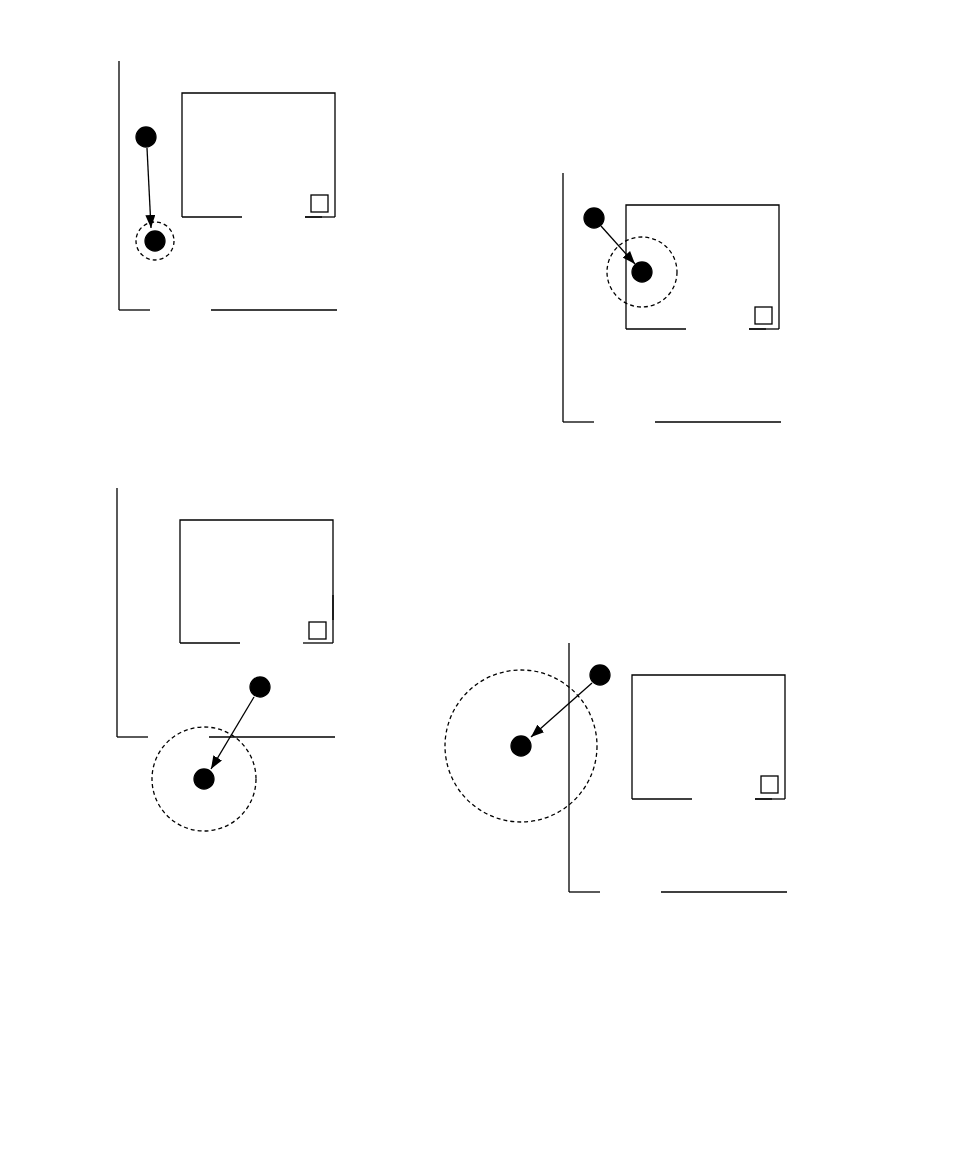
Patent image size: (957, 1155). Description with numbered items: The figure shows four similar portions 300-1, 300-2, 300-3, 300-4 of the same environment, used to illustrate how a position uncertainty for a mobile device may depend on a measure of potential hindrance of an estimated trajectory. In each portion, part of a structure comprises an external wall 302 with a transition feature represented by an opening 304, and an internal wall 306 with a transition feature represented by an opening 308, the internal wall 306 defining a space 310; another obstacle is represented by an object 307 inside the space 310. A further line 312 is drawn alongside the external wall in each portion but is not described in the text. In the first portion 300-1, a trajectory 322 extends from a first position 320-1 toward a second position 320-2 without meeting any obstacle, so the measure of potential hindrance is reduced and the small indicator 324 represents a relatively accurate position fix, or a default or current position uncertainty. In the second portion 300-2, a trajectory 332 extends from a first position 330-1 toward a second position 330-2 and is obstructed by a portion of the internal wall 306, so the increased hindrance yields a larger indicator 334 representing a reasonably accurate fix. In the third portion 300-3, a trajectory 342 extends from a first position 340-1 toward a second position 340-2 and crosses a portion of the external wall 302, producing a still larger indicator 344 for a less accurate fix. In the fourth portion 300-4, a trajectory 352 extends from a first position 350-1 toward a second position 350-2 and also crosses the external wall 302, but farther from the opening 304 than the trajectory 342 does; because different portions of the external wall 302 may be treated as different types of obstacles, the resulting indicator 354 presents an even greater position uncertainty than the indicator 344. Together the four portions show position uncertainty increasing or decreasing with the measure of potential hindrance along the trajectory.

In FIG. 3A, the portion of environment 300-1 is at (213, 38).
In FIG. 3B, the portion of environment 300-2 is at (656, 152).
In FIG. 3C, the portion of environment 300-3 is at (211, 465).
In FIG. 3D, the portion of environment 300-4 is at (663, 619).
In FIG. 3A, the external wall 302 is at (305, 312).
In FIG. 3B, the external wall 302 is at (749, 424).
In FIG. 3C, the external wall 302 is at (305, 739).
In FIG. 3D, the external wall 302 is at (578, 895).
In FIG. 3A, the opening 304 is at (182, 316).
In FIG. 3B, the opening 304 is at (626, 428).
In FIG. 3C, the opening 304 is at (183, 722).
In FIG. 3D, the opening 304 is at (630, 898).
In FIG. 3A, the internal wall 306 is at (321, 217).
In FIG. 3B, the internal wall 306 is at (765, 329).
In FIG. 3C, the internal wall 306 is at (333, 604).
In FIG. 3D, the internal wall 306 is at (771, 799).
In FIG. 3A, the object 307 is at (331, 201).
In FIG. 3B, the object 307 is at (775, 313).
In FIG. 3C, the object 307 is at (328, 627).
In FIG. 3D, the object 307 is at (781, 786).
In FIG. 3A, the opening 308 is at (260, 233).
In FIG. 3B, the opening 308 is at (704, 345).
In FIG. 3C, the opening 308 is at (268, 646).
In FIG. 3D, the opening 308 is at (709, 814).
In FIG. 3A, the space 310 is at (302, 146).
In FIG. 3B, the space 310 is at (746, 258).
In FIG. 3C, the space 310 is at (301, 570).
In FIG. 3D, the space 310 is at (751, 726).
In FIG. 3A, the left boundary line 312 is at (170, 113).
In FIG. 3B, the left boundary line 312 is at (614, 225).
In FIG. 3C, the left boundary line 312 is at (169, 540).
In FIG. 3D, the left boundary line 312 is at (619, 831).
In FIG. 3A, the first position 320-1 is at (137, 136).
In FIG. 3A, the second position 320-2 is at (145, 240).
In FIG. 3A, the trajectory 322 is at (147, 173).
In FIG. 3A, the indicator 324 is at (140, 255).
In FIG. 3B, the first position 330-1 is at (585, 221).
In FIG. 3B, the second position 330-2 is at (640, 282).
In FIG. 3B, the trajectory 332 is at (612, 238).
In FIG. 3B, the indicator 334 is at (610, 285).
In FIG. 3C, the first position 340-1 is at (270, 683).
In FIG. 3C, the second position 340-2 is at (215, 784).
In FIG. 3C, the trajectory 342 is at (243, 712).
In FIG. 3C, the indicator 344 is at (182, 830).
In FIG. 3D, the first position 350-1 is at (609, 668).
In FIG. 3D, the second position 350-2 is at (518, 736).
In FIG. 3D, the trajectory 352 is at (562, 712).
In FIG. 3D, the indicator 354 is at (512, 822).